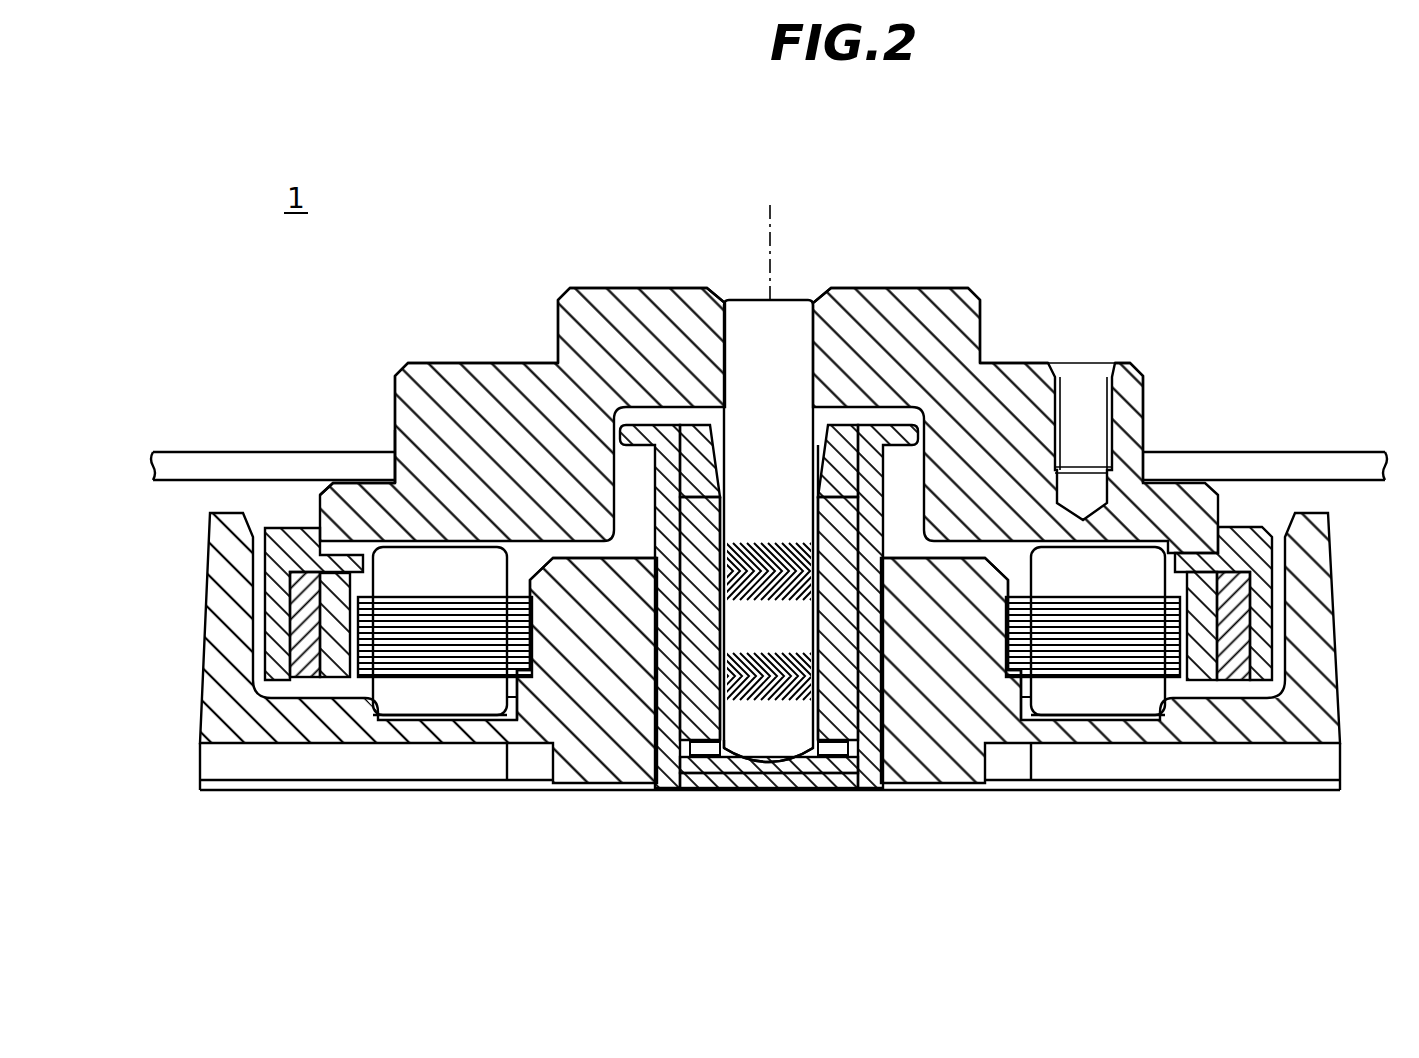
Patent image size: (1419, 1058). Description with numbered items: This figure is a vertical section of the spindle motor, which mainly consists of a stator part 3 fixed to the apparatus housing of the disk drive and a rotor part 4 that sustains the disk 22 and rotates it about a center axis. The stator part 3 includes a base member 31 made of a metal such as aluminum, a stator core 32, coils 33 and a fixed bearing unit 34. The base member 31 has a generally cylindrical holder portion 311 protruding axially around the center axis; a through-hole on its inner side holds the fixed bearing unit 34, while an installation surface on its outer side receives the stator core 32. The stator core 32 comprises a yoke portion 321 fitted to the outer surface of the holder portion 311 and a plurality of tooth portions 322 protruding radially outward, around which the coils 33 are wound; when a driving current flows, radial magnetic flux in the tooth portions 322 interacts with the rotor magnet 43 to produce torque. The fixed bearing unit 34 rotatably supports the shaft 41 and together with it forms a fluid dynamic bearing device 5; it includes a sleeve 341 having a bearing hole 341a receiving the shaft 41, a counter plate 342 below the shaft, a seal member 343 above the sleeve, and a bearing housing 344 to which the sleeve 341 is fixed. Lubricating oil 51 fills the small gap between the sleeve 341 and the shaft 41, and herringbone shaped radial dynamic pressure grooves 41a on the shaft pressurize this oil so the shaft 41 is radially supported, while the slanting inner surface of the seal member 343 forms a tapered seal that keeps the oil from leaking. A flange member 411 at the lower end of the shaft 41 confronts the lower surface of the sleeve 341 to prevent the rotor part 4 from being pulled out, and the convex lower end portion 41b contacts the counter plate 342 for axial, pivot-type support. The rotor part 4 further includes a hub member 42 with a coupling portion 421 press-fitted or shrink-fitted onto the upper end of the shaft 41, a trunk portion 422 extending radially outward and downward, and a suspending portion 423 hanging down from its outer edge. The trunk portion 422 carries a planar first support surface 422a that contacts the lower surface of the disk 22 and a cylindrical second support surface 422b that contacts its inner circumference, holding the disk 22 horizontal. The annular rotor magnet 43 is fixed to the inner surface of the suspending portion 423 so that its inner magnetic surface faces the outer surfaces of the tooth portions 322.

The stator part 3 is at (1306, 798).
The base member 31 is at (1017, 790).
The holder portion 311 is at (945, 740).
The stator core 32 is at (769, 733).
The yoke portion 321 is at (517, 647).
The tooth portions 322 is at (447, 653).
The coils 33 is at (395, 692).
The fixed bearing unit 34 is at (842, 422).
The sleeve 341 is at (722, 726).
The bearing hole 341a is at (772, 507).
The counter plate 342 is at (850, 775).
The seal member 343 is at (816, 470).
The bearing housing 344 is at (747, 790).
The rotor part 4 is at (1164, 356).
The shaft 41 is at (797, 318).
The radial dynamic pressure grooves 41a is at (803, 603).
The lower end portion 41b is at (788, 761).
The flange member 411 is at (705, 750).
The hub member 42 is at (984, 319).
The coupling portion 421 is at (648, 300).
The trunk portion 422 is at (452, 388).
The first support surface 422a is at (346, 481).
The second support surface 422b is at (393, 477).
The suspending portion 423 is at (273, 609).
The rotor magnet 43 is at (1207, 628).
The fluid dynamic bearing device 5 is at (898, 215).
The lubricating oil 51 is at (819, 452).
The disk 22 is at (190, 452).